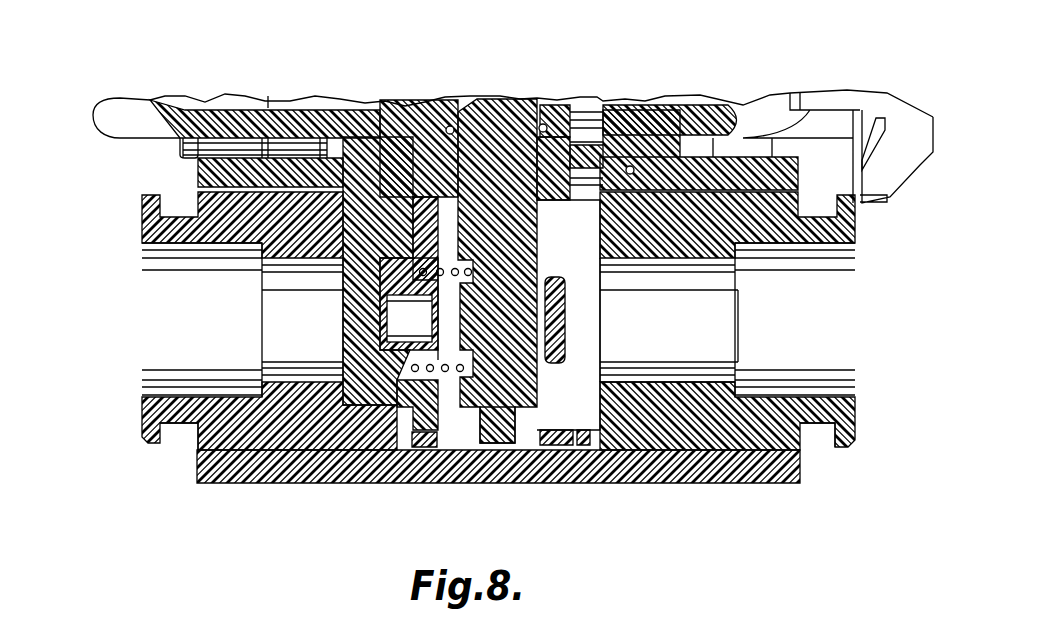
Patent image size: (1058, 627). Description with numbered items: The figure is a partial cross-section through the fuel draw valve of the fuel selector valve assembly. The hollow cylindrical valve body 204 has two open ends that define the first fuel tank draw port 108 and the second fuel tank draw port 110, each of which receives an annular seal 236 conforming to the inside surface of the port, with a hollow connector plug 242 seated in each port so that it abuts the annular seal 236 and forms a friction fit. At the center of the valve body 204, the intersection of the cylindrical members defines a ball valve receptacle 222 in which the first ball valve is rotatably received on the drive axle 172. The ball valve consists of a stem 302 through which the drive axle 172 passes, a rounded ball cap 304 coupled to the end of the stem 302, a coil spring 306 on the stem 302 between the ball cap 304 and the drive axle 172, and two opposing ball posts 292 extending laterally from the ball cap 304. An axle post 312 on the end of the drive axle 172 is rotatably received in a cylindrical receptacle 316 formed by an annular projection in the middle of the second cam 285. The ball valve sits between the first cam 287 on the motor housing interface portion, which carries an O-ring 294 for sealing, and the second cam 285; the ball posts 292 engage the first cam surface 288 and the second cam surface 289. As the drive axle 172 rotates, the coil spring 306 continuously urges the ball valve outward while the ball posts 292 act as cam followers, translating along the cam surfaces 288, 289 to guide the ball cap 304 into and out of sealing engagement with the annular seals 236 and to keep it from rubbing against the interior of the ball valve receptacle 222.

The first fuel tank draw port 108 is at (165, 322).
The second fuel tank draw port 110 is at (830, 320).
The drive axle 172 is at (578, 250).
The hollow cylindrical valve body 204 is at (625, 472).
The ball valve receptacle 222 is at (668, 140).
The annular seal 236 is at (350, 435).
The hollow connector plug 242 is at (178, 455).
The second cam 285 is at (395, 432).
The first cam 287 is at (468, 190).
The first cam surface 288 is at (612, 168).
The second cam surface 289 is at (412, 415).
The ball posts 292 is at (428, 195).
The O-ring 294 is at (378, 165).
The stem 302 is at (583, 285).
The ball cap 304 is at (385, 350).
The coil spring 306 is at (470, 450).
The axle post 312 is at (548, 442).
The cylindrical receptacle 316 is at (492, 448).